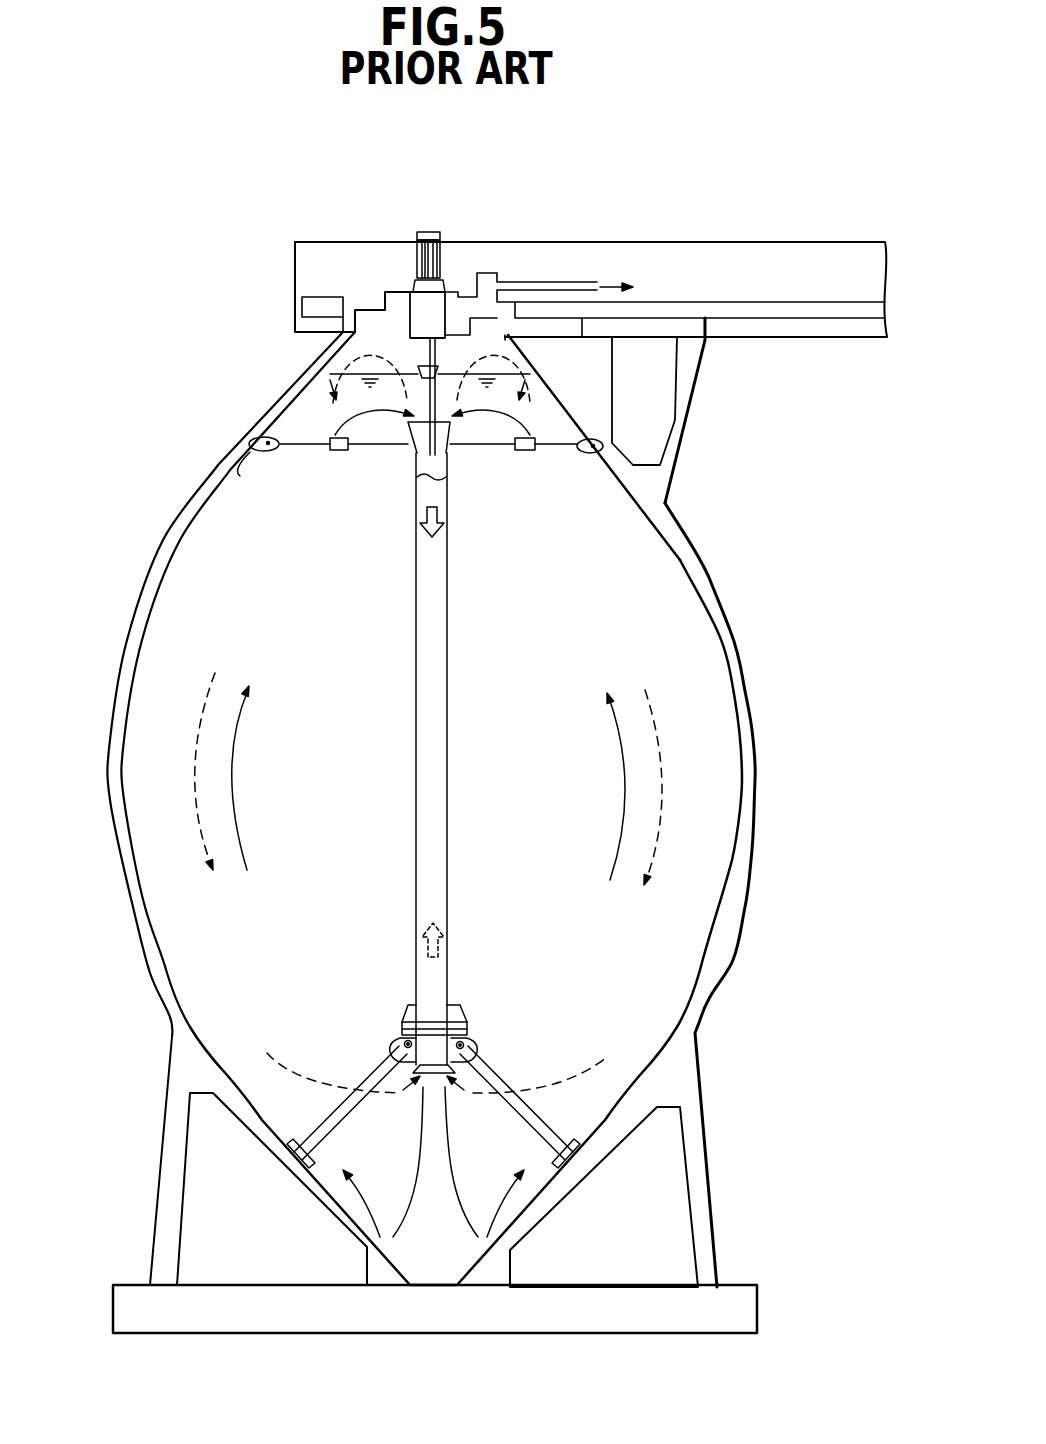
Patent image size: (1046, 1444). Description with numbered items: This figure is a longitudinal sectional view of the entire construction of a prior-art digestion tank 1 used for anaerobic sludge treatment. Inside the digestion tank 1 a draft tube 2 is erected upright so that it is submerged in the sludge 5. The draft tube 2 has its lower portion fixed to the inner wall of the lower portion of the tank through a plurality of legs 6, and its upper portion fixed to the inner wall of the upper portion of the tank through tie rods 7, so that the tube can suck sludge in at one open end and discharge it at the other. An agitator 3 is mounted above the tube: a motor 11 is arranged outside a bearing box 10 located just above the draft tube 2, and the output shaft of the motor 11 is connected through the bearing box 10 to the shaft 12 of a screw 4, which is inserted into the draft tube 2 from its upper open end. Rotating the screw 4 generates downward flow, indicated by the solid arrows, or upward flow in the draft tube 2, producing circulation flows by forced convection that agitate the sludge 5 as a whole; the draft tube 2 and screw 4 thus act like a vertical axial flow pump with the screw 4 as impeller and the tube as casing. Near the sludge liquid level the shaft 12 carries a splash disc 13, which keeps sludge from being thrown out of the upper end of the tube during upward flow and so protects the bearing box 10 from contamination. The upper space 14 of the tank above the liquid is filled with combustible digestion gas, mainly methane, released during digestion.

The digestion tank 1 is at (198, 400).
The draft tube 2 is at (443, 682).
The agitator 3 is at (449, 235).
The screw 4 is at (440, 460).
The sludge 5 is at (182, 597).
The legs 6 is at (320, 1113).
The tie rods 7 is at (293, 448).
The bearing box 10 is at (418, 315).
The motor 11 is at (418, 258).
The shaft 12 is at (437, 363).
The splash disc 13 is at (513, 350).
The upper space 14 is at (367, 333).